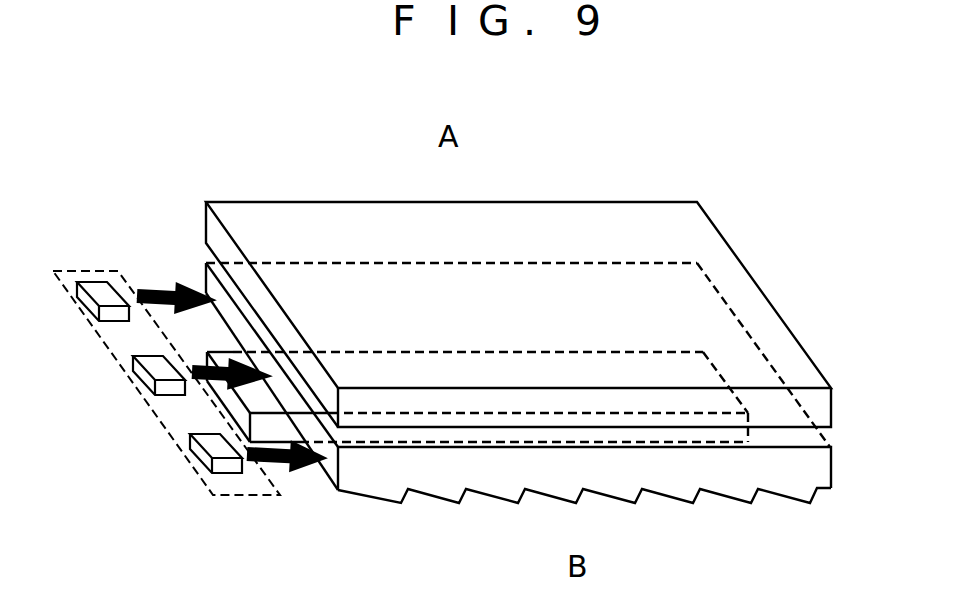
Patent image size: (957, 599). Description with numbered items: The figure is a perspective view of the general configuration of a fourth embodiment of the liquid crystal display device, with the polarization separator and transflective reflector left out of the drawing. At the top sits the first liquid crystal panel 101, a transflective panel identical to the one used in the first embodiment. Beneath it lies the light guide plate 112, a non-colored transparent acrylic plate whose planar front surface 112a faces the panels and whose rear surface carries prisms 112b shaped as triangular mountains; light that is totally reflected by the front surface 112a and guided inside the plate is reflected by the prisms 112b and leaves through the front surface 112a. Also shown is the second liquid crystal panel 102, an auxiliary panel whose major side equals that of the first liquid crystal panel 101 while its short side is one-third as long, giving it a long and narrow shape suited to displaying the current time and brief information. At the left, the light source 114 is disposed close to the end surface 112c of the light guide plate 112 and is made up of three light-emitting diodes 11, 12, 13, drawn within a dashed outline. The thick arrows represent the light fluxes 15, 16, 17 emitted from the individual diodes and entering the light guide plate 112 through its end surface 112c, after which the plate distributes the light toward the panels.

The first liquid crystal panel 101 is at (712, 246).
The light guide plate 112 is at (535, 353).
The front surface 112a is at (816, 442).
The prisms 112b is at (665, 497).
The end surface 112c is at (211, 285).
The second liquid crystal panel 102 is at (236, 406).
The light source 114 is at (245, 497).
The light emitting diode 11 is at (84, 304).
The light emitting diode 12 is at (137, 383).
The light emitting diode 13 is at (192, 458).
The light flux 15 is at (150, 286).
The light flux 16 is at (194, 366).
The light flux 17 is at (287, 468).